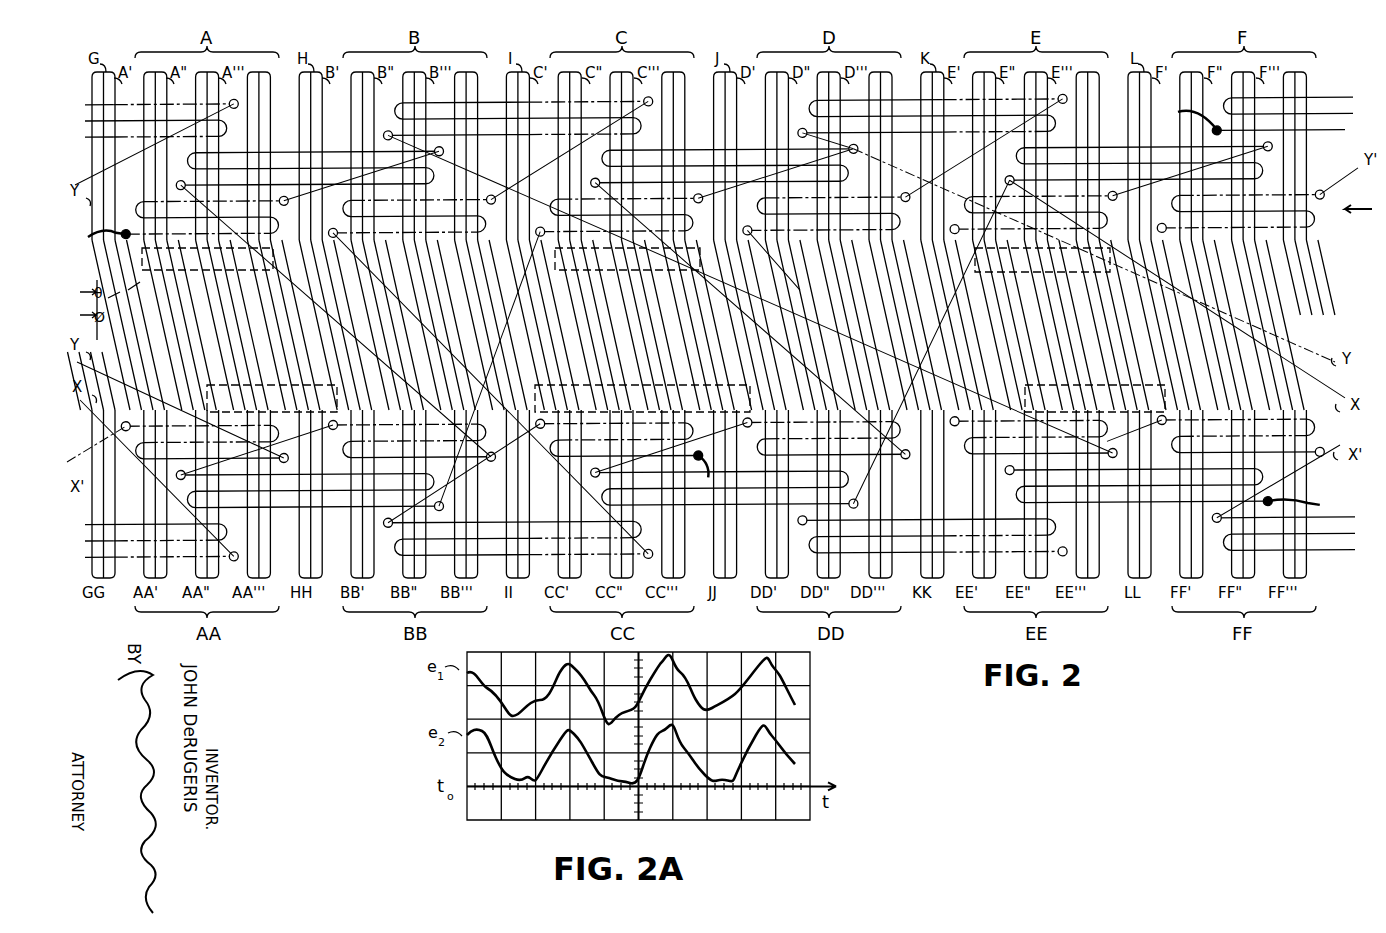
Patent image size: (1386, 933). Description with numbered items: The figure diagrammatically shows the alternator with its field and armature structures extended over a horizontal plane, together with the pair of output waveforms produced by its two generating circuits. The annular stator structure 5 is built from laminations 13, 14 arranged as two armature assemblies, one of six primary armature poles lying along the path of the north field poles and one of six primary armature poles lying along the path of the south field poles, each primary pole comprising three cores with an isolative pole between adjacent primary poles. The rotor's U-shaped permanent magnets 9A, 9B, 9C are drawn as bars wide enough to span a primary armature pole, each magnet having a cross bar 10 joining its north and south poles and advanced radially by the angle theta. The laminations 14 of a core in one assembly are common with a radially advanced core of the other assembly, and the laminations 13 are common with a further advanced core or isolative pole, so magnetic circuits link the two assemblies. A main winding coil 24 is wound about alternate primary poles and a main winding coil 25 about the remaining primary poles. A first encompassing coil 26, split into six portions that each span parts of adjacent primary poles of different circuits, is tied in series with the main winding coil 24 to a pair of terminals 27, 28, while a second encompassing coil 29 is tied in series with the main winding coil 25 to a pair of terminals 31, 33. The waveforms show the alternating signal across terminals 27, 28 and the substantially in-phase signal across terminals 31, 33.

The annular stator structure 5 is at (1365, 209).
The U-shaped permanent magnet 9A is at (332, 404).
The U-shaped permanent magnet 9B is at (650, 404).
The U-shaped permanent magnet 9C is at (1160, 404).
The cross bar 10 is at (1073, 335).
The laminations 13 is at (1325, 258).
The laminations 14 is at (128, 335).
The main winding coil 24 is at (1168, 473).
The main winding coil 25 is at (960, 438).
The first encompassing coil 26 is at (1118, 507).
The terminal 27 is at (97, 237).
The terminal 28 is at (1302, 493).
The second encompassing coil 29 is at (1346, 552).
The terminal 31 is at (699, 470).
The terminal 33 is at (1188, 122).